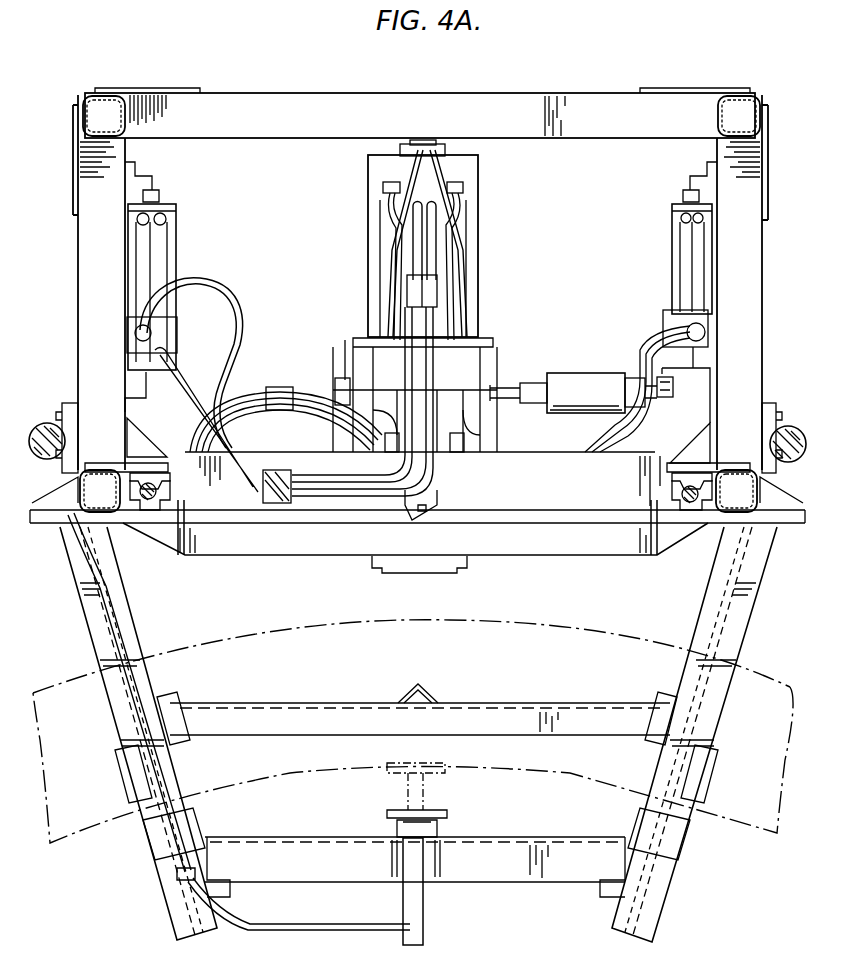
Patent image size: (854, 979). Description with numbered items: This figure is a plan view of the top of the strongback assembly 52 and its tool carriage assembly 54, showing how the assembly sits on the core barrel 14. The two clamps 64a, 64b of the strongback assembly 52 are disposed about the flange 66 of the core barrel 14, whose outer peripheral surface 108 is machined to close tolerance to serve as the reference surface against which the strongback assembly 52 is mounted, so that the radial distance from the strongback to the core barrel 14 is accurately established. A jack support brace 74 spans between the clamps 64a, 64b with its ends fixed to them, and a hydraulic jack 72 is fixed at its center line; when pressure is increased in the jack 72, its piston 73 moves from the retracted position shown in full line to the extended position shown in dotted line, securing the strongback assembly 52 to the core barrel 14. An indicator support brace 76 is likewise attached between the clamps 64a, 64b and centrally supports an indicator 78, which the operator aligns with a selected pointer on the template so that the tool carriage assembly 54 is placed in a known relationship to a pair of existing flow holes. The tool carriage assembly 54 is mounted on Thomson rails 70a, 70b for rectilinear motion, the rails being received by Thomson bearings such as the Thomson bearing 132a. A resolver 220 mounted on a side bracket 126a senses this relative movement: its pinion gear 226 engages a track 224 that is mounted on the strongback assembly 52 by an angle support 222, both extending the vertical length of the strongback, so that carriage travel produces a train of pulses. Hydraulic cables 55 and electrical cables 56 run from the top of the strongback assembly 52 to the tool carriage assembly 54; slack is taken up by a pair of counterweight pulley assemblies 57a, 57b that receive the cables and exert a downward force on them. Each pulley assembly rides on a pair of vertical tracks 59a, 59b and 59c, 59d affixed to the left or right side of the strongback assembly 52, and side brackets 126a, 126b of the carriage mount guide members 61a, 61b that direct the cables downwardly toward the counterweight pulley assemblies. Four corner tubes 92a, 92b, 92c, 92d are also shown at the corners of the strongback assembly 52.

The core barrel 14 is at (608, 632).
The strongback assembly 52 is at (518, 88).
The tool carriage assembly 54 is at (488, 322).
The hydraulic cables 55 is at (434, 254).
The electrical cables 56 is at (410, 254).
The counterweight pulley assembly 57a is at (705, 245).
The counterweight pulley assembly 57b is at (132, 247).
The vertical track 59a is at (688, 178).
The vertical track 59b is at (700, 372).
The vertical track 59c is at (140, 405).
The bracket 59d is at (152, 182).
The guide member 61a is at (662, 318).
The guide member 61b is at (172, 340).
The clamp 64a is at (656, 918).
The clamp 64b is at (175, 915).
The flange 66 is at (765, 680).
The Thomson rail 70a is at (684, 494).
The Thomson rail 70b is at (158, 490).
The hydraulic jack 72 is at (420, 915).
The piston 73 is at (438, 814).
The jack support brace 74 is at (505, 855).
The indicator support brace 76 is at (527, 715).
The indicator 78 is at (420, 690).
The tube 92a is at (738, 482).
The tube 92b is at (98, 482).
The tube 92c is at (100, 112).
The tube 92d is at (752, 110).
The outer peripheral surface 108 is at (263, 628).
The side bracket 126a is at (648, 446).
The side bracket 126b is at (196, 380).
The Thomson bearing 132a is at (148, 556).
The resolver 220 is at (558, 372).
The angle support 222 is at (668, 396).
The track 224 is at (660, 383).
The pinion gear 226 is at (690, 420).